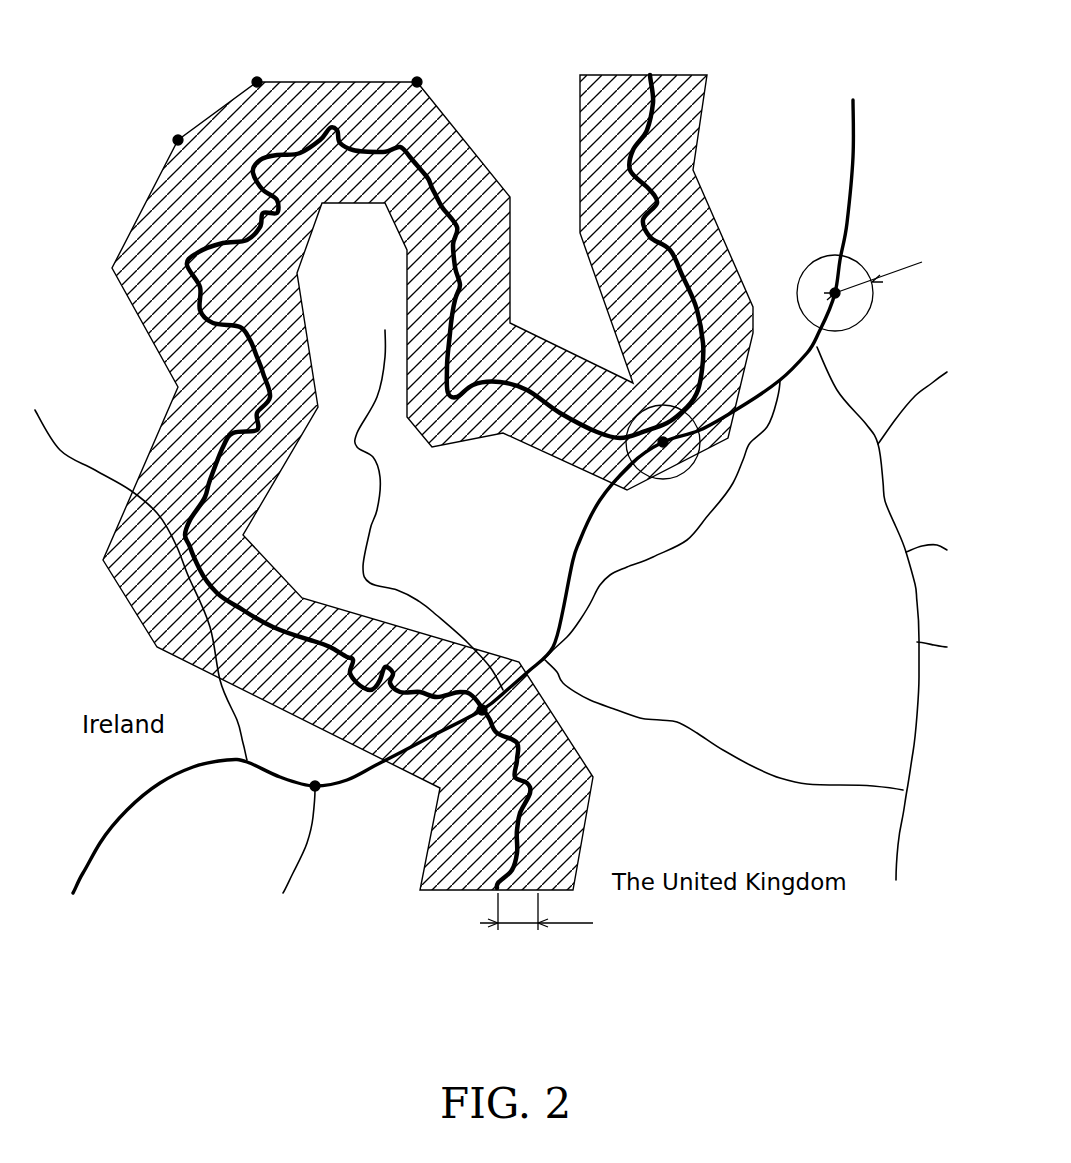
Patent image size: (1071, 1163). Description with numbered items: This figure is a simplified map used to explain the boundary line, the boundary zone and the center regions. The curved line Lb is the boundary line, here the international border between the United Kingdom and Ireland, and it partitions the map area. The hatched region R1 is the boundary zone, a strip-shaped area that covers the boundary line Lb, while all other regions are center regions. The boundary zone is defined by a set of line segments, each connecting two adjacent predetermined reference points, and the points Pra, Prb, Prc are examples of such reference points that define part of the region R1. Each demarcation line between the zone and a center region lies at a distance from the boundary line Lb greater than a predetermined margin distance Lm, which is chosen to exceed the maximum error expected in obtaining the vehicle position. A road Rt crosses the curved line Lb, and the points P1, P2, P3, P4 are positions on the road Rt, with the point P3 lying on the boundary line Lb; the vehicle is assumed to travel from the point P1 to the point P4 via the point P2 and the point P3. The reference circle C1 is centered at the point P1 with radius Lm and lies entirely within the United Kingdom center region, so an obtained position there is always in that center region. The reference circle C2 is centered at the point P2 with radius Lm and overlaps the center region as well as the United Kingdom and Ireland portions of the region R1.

The boundary zone R1 is at (340, 82).
The boundary line Lb is at (650, 70).
The road Rt is at (852, 157).
The reference circle C1 is at (808, 257).
The reference circle C2 is at (660, 482).
The margin distance Lm is at (701, 583).
The point P1 is at (838, 298).
The point P2 is at (665, 445).
The point P3 is at (483, 710).
The point P4 is at (307, 790).
The reference point Pra is at (417, 82).
The reference point Prb is at (257, 82).
The reference point Prc is at (178, 140).